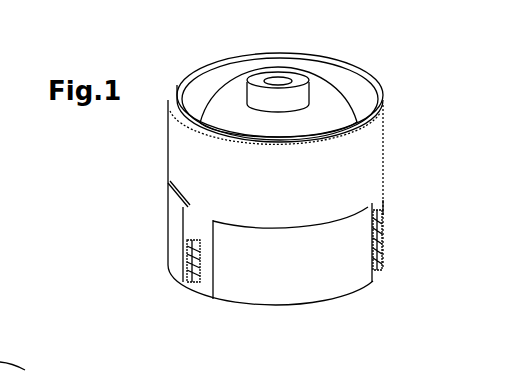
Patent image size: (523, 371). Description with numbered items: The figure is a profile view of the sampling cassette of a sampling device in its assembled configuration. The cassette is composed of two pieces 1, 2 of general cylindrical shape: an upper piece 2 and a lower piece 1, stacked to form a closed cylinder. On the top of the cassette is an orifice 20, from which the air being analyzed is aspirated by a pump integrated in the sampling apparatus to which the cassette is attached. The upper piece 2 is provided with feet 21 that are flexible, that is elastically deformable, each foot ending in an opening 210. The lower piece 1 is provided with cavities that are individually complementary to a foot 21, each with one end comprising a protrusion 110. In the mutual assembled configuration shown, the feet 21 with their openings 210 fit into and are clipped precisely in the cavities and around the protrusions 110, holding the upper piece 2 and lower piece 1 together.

The lower piece 1 is at (350, 272).
The upper piece 2 is at (370, 157).
The orifice 20 is at (280, 72).
The feet 21 is at (195, 227).
The opening 210 is at (185, 250).
The protrusion 110 is at (180, 276).